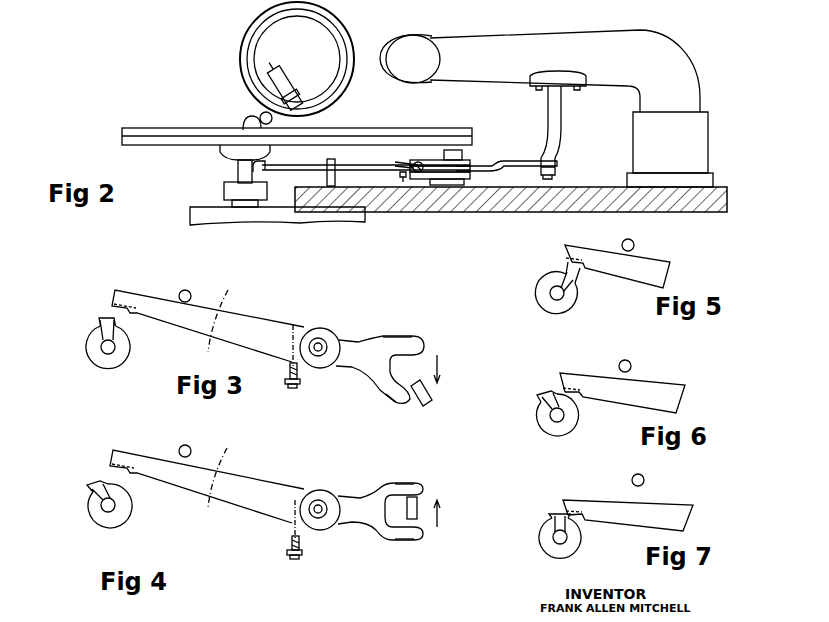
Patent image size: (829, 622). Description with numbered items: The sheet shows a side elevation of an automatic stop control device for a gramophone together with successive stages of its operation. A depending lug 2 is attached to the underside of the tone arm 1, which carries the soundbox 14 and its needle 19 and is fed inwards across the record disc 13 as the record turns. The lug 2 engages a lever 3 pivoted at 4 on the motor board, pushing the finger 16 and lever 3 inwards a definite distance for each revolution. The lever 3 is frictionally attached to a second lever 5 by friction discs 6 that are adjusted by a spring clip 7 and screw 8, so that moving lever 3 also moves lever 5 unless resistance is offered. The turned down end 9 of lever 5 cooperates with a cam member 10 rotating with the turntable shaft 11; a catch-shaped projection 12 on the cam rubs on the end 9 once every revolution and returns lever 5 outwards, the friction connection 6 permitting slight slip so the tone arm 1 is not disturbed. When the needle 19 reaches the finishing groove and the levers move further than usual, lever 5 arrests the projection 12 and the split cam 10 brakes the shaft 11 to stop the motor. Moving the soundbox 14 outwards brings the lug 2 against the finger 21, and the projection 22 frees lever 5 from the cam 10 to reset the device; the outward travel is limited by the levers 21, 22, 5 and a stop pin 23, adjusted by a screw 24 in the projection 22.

In FIG. 2, the tone arm 1 is at (503, 38).
In FIG. 2, the depending lug 2 is at (562, 122).
In FIG. 3, the depending lug 2 is at (432, 398).
In FIG. 4, the depending lug 2 is at (420, 510).
In FIG. 2, the lever 3 is at (510, 162).
In FIG. 3, the lever 3 is at (362, 340).
In FIG. 4, the lever 3 is at (354, 498).
In FIG. 2, the pivot 4 is at (455, 150).
In FIG. 3, the pivot 4 is at (318, 344).
In FIG. 4, the pivot 4 is at (318, 506).
In FIG. 2, the lever 5 is at (377, 164).
In FIG. 3, the lever 5 is at (238, 313).
In FIG. 4, the lever 5 is at (228, 478).
In FIG. 5, the lever 5 is at (670, 262).
In FIG. 6, the lever 5 is at (657, 383).
In FIG. 7, the lever 5 is at (668, 504).
In FIG. 2, the friction discs 6 is at (438, 182).
In FIG. 2, the spring clip 7 is at (419, 162).
In FIG. 2, the screw 8 is at (402, 183).
In FIG. 2, the turned down end 9 is at (265, 170).
In FIG. 3, the turned down end 9 is at (113, 306).
In FIG. 4, the turned down end 9 is at (112, 466).
In FIG. 5, the turned down end 9 is at (568, 263).
In FIG. 6, the turned down end 9 is at (560, 391).
In FIG. 7, the turned down end 9 is at (572, 516).
In FIG. 2, the cam member 10 is at (224, 193).
In FIG. 3, the cam member 10 is at (127, 363).
In FIG. 4, the cam member 10 is at (95, 522).
In FIG. 5, the cam member 10 is at (538, 301).
In FIG. 6, the cam member 10 is at (544, 432).
In FIG. 7, the cam member 10 is at (543, 550).
In FIG. 2, the turntable shaft 11 is at (238, 172).
In FIG. 3, the turntable shaft 11 is at (104, 350).
In FIG. 4, the turntable shaft 11 is at (114, 510).
In FIG. 5, the turntable shaft 11 is at (561, 297).
In FIG. 6, the turntable shaft 11 is at (564, 416).
In FIG. 7, the turntable shaft 11 is at (566, 540).
In FIG. 3, the projection 12 is at (100, 318).
In FIG. 4, the projection 12 is at (86, 487).
In FIG. 5, the projection 12 is at (566, 264).
In FIG. 6, the projection 12 is at (536, 400).
In FIG. 7, the projection 12 is at (549, 512).
In FIG. 2, the record disc 13 is at (132, 128).
In FIG. 2, the soundbox 14 is at (240, 70).
In FIG. 3, the finger 16 is at (410, 337).
In FIG. 4, the finger 16 is at (404, 490).
In FIG. 2, the soundbox needle 19 is at (258, 126).
In FIG. 3, the finger 21 is at (396, 396).
In FIG. 4, the finger 21 is at (405, 542).
In FIG. 3, the projection 22 is at (300, 376).
In FIG. 4, the projection 22 is at (302, 548).
In FIG. 2, the stop pin 23 is at (335, 162).
In FIG. 3, the stop pin 23 is at (191, 296).
In FIG. 4, the stop pin 23 is at (191, 450).
In FIG. 5, the stop pin 23 is at (634, 244).
In FIG. 6, the stop pin 23 is at (630, 362).
In FIG. 7, the stop pin 23 is at (643, 478).
In FIG. 3, the screw 24 is at (290, 389).
In FIG. 4, the screw 24 is at (293, 560).